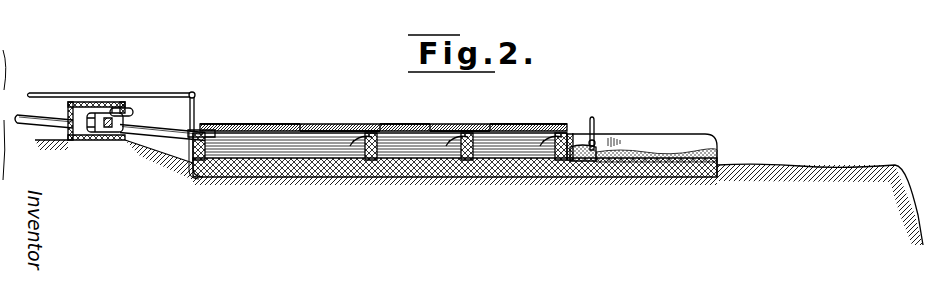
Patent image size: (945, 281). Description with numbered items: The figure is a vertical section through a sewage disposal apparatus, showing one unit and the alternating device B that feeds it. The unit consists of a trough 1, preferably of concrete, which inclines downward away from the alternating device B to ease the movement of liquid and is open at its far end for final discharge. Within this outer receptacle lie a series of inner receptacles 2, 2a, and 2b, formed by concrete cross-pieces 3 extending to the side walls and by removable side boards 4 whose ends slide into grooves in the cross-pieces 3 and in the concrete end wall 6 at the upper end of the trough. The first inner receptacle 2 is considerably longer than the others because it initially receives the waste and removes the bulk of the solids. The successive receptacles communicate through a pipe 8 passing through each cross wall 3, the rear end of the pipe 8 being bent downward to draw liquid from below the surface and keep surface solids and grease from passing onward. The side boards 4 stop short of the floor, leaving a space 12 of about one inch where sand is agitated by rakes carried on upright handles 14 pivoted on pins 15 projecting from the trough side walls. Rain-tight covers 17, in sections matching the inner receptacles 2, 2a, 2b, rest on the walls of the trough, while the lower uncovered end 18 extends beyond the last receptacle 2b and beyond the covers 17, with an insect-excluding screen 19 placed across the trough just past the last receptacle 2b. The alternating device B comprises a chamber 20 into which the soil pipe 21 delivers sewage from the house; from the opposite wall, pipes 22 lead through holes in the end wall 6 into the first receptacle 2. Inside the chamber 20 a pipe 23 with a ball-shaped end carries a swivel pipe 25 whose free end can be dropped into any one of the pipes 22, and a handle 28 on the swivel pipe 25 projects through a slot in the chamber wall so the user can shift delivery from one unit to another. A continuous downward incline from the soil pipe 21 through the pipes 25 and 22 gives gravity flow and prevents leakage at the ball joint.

The trough 1 is at (340, 181).
The first inner receptacle 2 is at (290, 146).
The inner receptacle 2a is at (426, 150).
The last inner receptacle 2b is at (523, 156).
The cross-piece 3 is at (371, 160).
The removable side board 4 is at (240, 136).
The end wall 6 is at (191, 166).
The pipe 8 is at (358, 141).
The space 12 is at (218, 172).
The upright handle 14 is at (597, 124).
The pin 15 is at (610, 144).
The rain-tight cover 17 is at (318, 127).
The lower uncovered end 18 is at (690, 142).
The insect-excluding screen 19 is at (573, 134).
The chamber 20 is at (72, 103).
The soil pipe 21 is at (27, 123).
The pipe 22 is at (178, 127).
The pipe 23 is at (93, 136).
The swivel pipe 25 is at (116, 141).
The handle 28 is at (131, 108).
The alternating device B is at (88, 103).